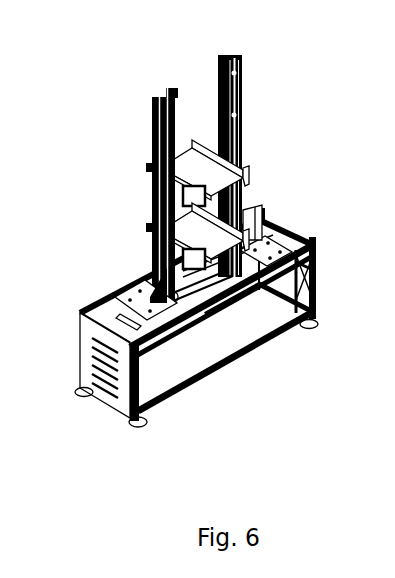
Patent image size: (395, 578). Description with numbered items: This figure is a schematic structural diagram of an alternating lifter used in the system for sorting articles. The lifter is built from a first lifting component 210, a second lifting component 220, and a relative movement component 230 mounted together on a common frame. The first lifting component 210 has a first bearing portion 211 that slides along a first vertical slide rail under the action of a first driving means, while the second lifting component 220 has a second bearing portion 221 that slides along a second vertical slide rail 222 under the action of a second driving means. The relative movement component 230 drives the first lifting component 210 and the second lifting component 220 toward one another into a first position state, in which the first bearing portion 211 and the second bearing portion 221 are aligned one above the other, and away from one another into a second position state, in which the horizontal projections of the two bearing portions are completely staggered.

The first lifting component 210 is at (151, 130).
The second lifting component 220 is at (241, 63).
The second vertical slide rail 222 is at (230, 137).
The first bearing portion 211 is at (226, 177).
The second bearing portion 221 is at (223, 235).
The relative movement component 230 is at (148, 302).